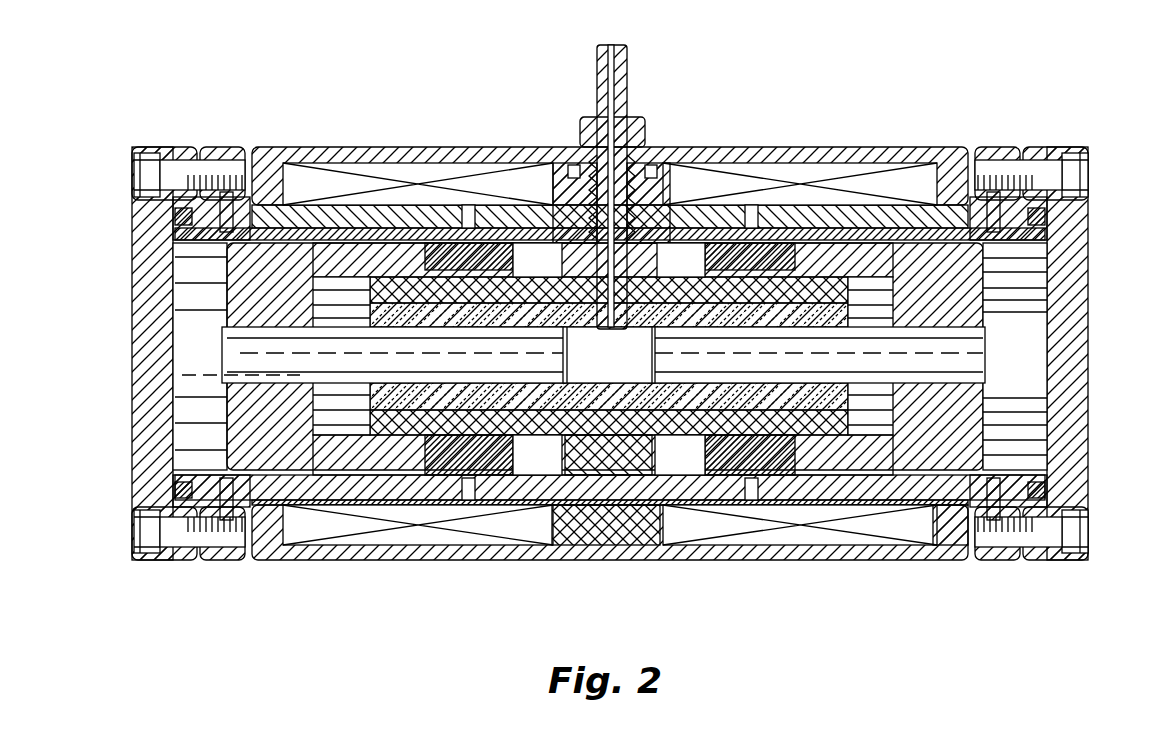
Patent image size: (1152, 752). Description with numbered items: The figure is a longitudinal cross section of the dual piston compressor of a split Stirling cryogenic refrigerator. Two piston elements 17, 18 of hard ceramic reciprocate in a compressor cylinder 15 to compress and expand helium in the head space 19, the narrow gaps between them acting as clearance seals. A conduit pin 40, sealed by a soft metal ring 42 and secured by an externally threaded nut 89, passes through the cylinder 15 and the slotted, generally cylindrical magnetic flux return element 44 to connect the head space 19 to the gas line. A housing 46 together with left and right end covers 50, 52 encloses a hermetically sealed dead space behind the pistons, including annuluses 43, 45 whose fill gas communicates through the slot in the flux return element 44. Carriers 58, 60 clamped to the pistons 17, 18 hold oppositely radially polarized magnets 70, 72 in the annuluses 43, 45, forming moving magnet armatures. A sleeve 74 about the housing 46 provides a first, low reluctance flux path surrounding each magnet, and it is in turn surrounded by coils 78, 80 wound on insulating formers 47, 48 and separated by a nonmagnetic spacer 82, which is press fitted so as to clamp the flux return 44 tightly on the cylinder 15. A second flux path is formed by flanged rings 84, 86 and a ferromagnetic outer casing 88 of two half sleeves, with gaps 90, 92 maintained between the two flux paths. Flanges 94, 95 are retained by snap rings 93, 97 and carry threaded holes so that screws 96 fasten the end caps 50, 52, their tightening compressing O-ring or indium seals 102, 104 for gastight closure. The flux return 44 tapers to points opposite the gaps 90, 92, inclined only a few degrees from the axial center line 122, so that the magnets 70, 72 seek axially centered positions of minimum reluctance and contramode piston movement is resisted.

The compressor cylinder 15 is at (900, 312).
The piston element 17 is at (270, 346).
The piston element 18 is at (967, 341).
The head space 19 is at (620, 372).
The conduit pin 40 is at (628, 72).
The soft metal ring 42 is at (647, 258).
The annulus 43 is at (535, 255).
The magnetic flux return element 44 is at (900, 410).
The annulus 45 is at (723, 243).
The housing 46 is at (1020, 245).
The insulating former 47 is at (549, 503).
The insulating former 48 is at (919, 550).
The left end cover 50 is at (134, 426).
The right end cover 52 is at (1089, 380).
The carrier 58 is at (227, 288).
The carrier 60 is at (987, 427).
The radially polarized magnet 70 is at (441, 252).
The radially polarized magnet 72 is at (785, 257).
The sleeve 74 is at (624, 492).
The coil 78 is at (414, 545).
The coil 80 is at (833, 540).
The nonmagnetic spacer 82 is at (650, 165).
The flanged ring 84 is at (265, 560).
The flanged ring 86 is at (948, 561).
The outer casing 88 is at (340, 550).
The externally threaded nut 89 is at (583, 123).
The gap 90 is at (465, 502).
The gap 92 is at (751, 502).
The snap ring 93 is at (1045, 491).
The flange 94 is at (990, 562).
The flange 95 is at (224, 560).
The screw 96 is at (137, 529).
The snap ring 97 is at (173, 490).
The seal 102 is at (173, 214).
The seal 104 is at (1045, 215).
The axial center line 122 is at (223, 373).